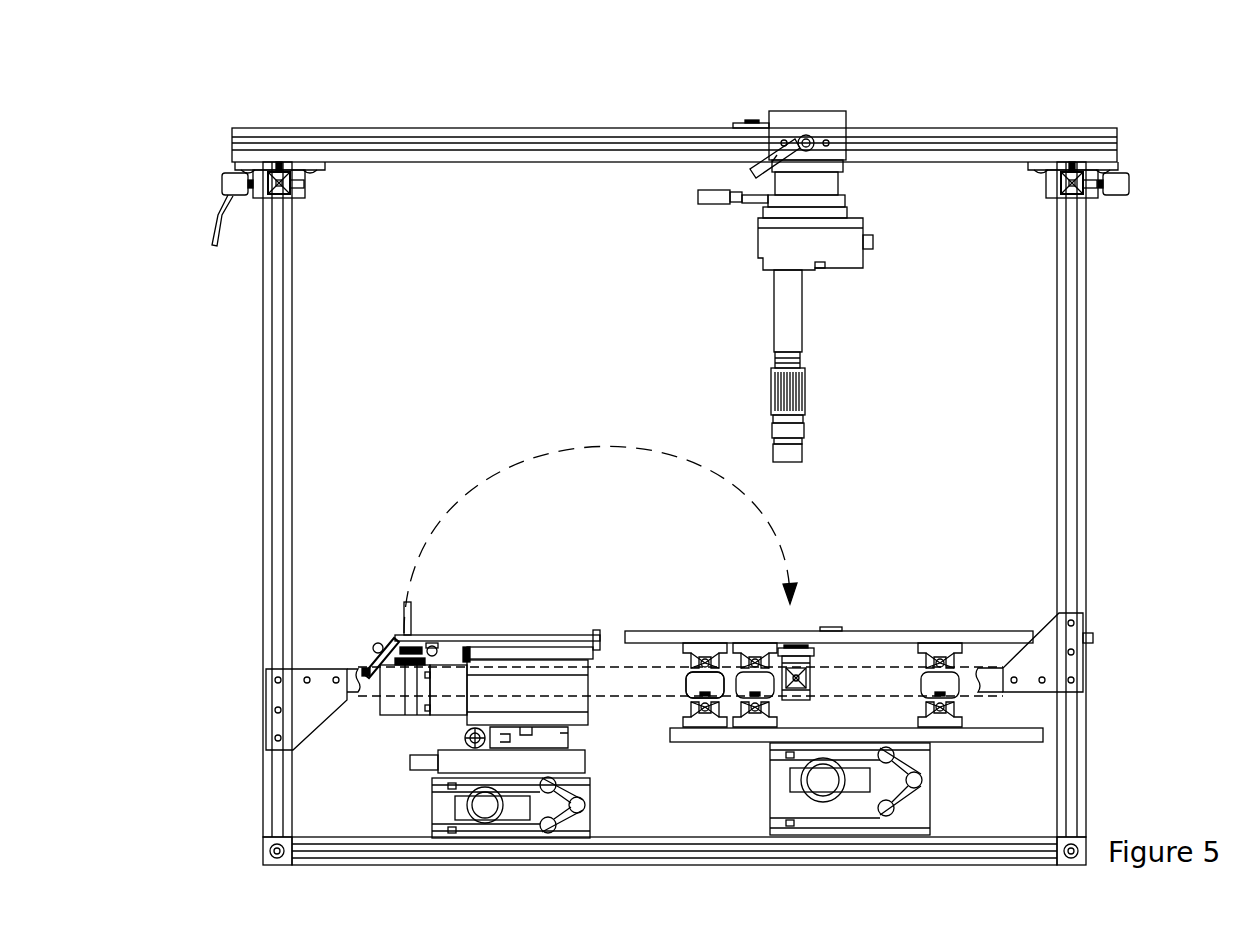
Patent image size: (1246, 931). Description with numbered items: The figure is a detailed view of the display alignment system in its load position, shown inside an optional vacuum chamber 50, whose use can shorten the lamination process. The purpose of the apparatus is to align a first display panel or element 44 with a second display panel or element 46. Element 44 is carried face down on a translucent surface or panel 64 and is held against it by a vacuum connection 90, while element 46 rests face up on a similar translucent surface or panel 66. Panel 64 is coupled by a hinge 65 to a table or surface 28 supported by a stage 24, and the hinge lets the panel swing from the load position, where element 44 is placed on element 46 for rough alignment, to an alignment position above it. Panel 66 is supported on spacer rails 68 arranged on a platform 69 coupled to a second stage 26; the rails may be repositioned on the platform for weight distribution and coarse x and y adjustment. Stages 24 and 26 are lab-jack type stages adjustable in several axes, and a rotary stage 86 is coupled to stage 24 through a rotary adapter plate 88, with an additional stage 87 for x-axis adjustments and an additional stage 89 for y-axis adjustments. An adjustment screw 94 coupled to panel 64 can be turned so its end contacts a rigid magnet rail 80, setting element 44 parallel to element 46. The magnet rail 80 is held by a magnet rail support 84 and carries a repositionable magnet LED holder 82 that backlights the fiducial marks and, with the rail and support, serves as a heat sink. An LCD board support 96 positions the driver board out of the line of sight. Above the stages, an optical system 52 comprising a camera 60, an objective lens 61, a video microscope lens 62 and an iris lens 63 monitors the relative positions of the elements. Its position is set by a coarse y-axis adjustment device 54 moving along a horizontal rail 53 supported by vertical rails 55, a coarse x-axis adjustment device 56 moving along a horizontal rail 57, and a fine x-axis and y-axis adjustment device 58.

The vacuum chamber 50 is at (366, 82).
The optical system 52 is at (716, 292).
The horizontal rail 53 is at (1063, 200).
The coarse y-axis adjustment device 54 is at (1108, 190).
The vertical rails 55 is at (1058, 298).
The coarse x-axis adjustment device 56 is at (838, 124).
The horizontal rail 57 is at (926, 157).
The fine x-axis and y-axis adjustment device 58 is at (712, 192).
The camera 60 is at (760, 247).
The objective lens 61 is at (795, 452).
The video microscope lens 62 is at (802, 388).
The iris lens 63 is at (775, 356).
The stage 24 is at (443, 800).
The stage 26 is at (916, 786).
The table or surface 28 is at (517, 650).
The display panel or element 44 is at (552, 636).
The display panel or element 46 is at (670, 630).
The surface or panel 64 is at (581, 640).
The hinge 65 is at (600, 634).
The surface or panel 66 is at (712, 640).
The spacer rails 68 is at (690, 690).
The platform 69 is at (700, 737).
The magnet rail 80 is at (810, 670).
The magnet LED holder 82 is at (805, 656).
The magnet rail support 84 is at (800, 696).
The rotary stage 86 is at (385, 706).
The additional stage 87 is at (585, 763).
The rotary adapter plate 88 is at (470, 722).
The additional stage 89 is at (566, 740).
The vacuum connection 90 is at (440, 646).
The adjustment screw 94 is at (404, 610).
The LCD board support 96 is at (368, 665).